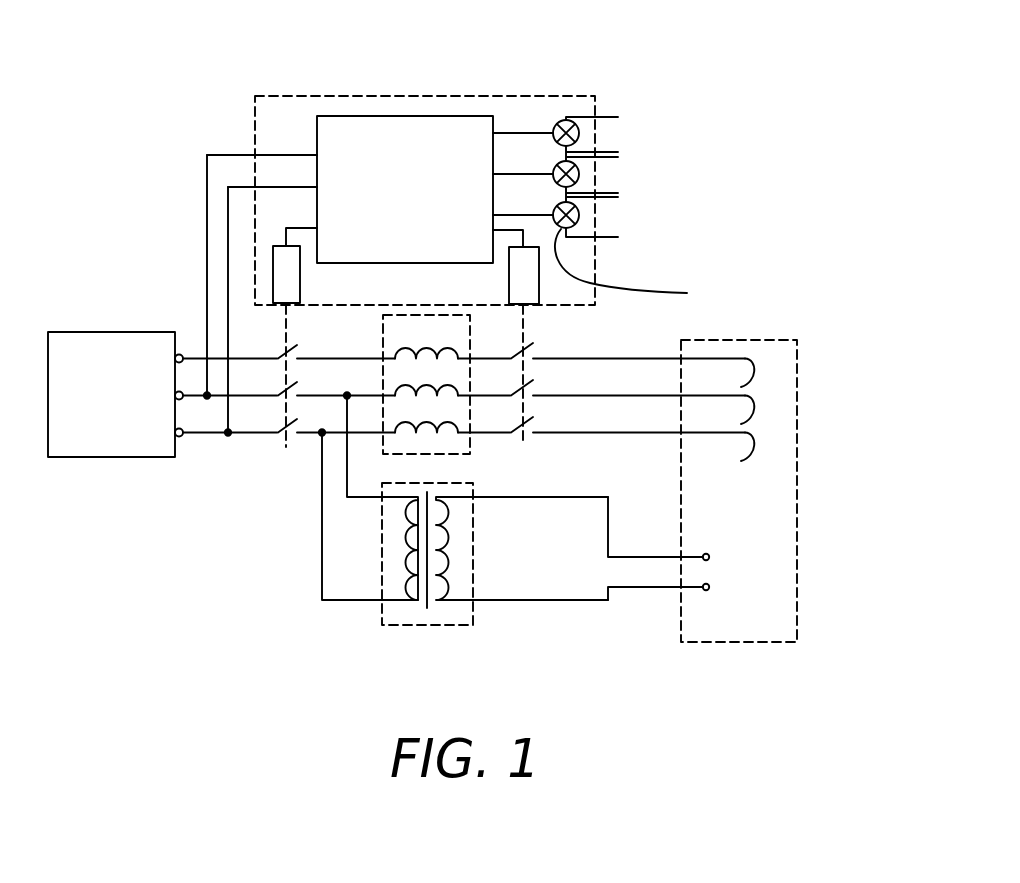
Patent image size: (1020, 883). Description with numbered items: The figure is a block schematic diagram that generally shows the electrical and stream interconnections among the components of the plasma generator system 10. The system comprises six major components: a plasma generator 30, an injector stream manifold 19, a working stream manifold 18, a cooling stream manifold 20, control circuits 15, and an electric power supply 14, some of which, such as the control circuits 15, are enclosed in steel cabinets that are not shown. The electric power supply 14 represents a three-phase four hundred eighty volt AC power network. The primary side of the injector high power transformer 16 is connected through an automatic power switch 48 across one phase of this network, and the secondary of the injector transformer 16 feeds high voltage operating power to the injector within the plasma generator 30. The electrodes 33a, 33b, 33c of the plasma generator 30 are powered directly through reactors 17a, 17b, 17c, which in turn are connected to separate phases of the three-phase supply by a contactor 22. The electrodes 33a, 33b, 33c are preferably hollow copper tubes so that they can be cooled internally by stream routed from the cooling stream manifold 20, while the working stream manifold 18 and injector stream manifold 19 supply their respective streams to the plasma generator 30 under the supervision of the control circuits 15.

The plasma generator system 10 is at (215, 68).
The electric power supply 14 is at (117, 331).
The control circuits 15 is at (407, 200).
The injector high power transformer 16 is at (405, 610).
The reactor 17a is at (460, 358).
The reactor 17b is at (460, 395).
The reactor 17c is at (458, 432).
The working stream manifold 18 is at (553, 172).
The injector stream manifold 19 is at (556, 125).
The cooling stream manifold 20 is at (634, 268).
The contactor 22 is at (525, 442).
The plasma generator 30 is at (782, 580).
The electrode 33a is at (753, 370).
The electrode 33b is at (753, 410).
The electrode 33c is at (753, 445).
The automatic power switch 48 is at (283, 442).